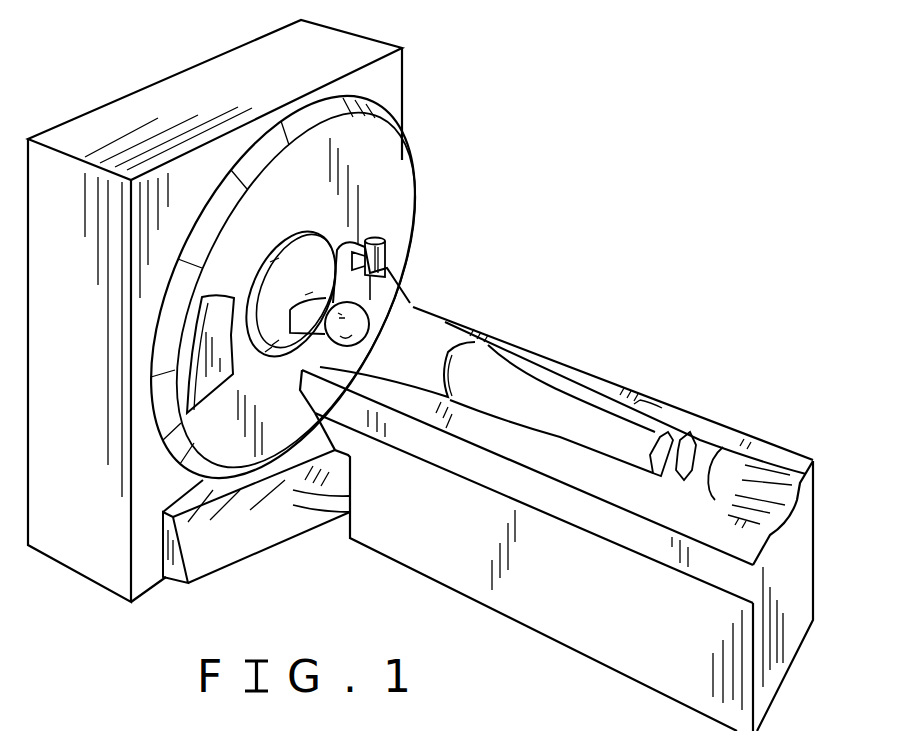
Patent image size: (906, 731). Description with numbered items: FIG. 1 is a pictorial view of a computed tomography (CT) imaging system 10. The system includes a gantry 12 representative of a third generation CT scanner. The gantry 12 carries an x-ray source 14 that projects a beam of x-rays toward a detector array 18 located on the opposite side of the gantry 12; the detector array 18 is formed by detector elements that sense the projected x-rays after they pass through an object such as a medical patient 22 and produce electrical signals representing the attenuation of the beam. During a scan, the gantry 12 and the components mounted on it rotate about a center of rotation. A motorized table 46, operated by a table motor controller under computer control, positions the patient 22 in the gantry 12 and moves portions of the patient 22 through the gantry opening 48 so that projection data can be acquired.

The CT imaging system 10 is at (327, 518).
The gantry 12 is at (58, 187).
The x-ray source 14 is at (387, 256).
The detector array 18 is at (205, 375).
The patient 22 is at (425, 337).
The motorized table 46 is at (430, 538).
The gantry opening 48 is at (277, 274).